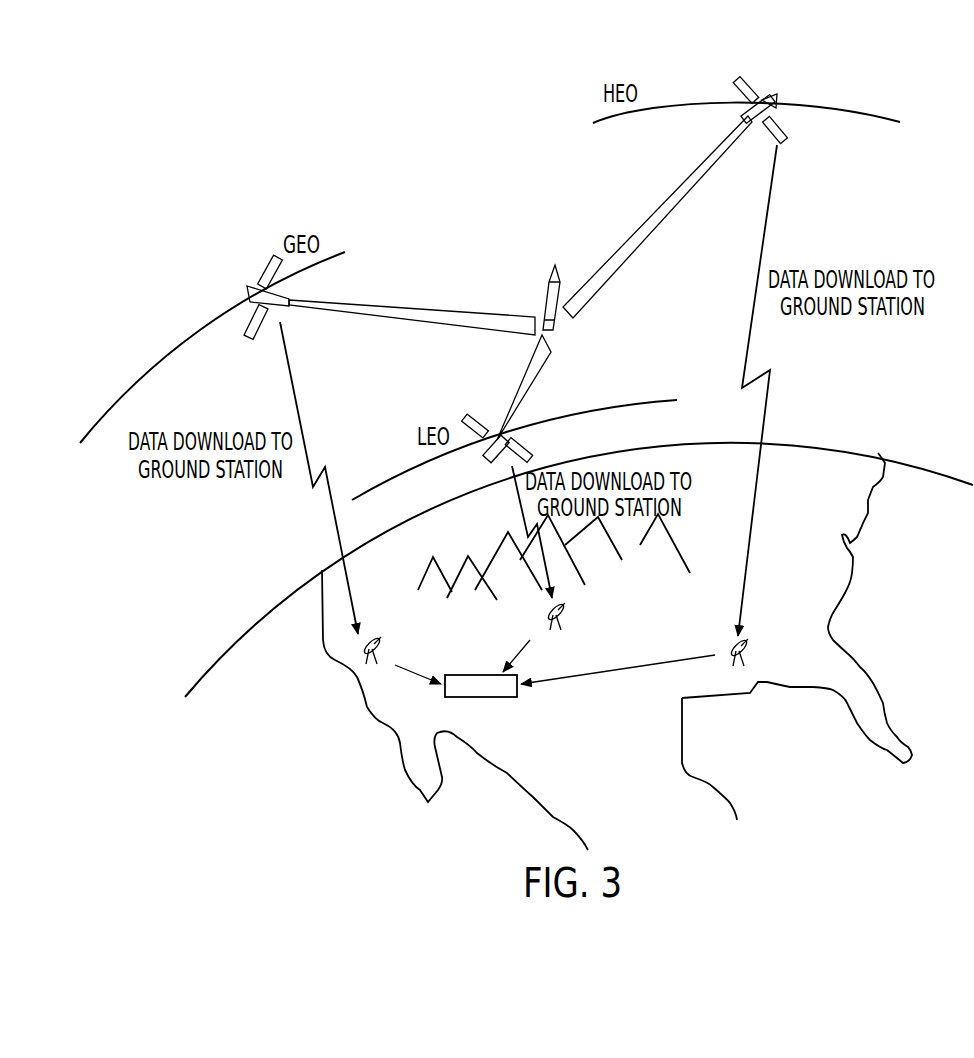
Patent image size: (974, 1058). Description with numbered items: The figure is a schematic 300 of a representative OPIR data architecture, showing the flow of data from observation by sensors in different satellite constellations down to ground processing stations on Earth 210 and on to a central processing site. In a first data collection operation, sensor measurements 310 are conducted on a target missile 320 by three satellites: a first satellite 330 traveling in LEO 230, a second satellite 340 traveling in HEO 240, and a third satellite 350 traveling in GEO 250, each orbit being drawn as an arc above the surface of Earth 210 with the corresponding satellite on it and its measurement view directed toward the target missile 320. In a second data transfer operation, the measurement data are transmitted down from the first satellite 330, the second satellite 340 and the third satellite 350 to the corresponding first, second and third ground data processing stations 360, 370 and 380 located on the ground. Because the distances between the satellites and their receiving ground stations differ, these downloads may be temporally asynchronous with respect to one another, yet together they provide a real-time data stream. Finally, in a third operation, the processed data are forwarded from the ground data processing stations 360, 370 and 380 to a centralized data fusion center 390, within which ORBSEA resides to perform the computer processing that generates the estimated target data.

The Earth 210 is at (806, 511).
The LEO 230 is at (381, 479).
The HEO 240 is at (836, 118).
The GEO 250 is at (199, 331).
The schematic 300 is at (196, 168).
The sensor measurements 310 is at (391, 306).
The target missile 320 is at (545, 301).
The first satellite 330 is at (497, 430).
The second satellite 340 is at (773, 98).
The third satellite 350 is at (247, 293).
The first ground data processing station 360 is at (539, 616).
The second ground data processing station 370 is at (754, 656).
The third ground data processing station 380 is at (376, 669).
The centralized data fusion center 390 is at (480, 698).